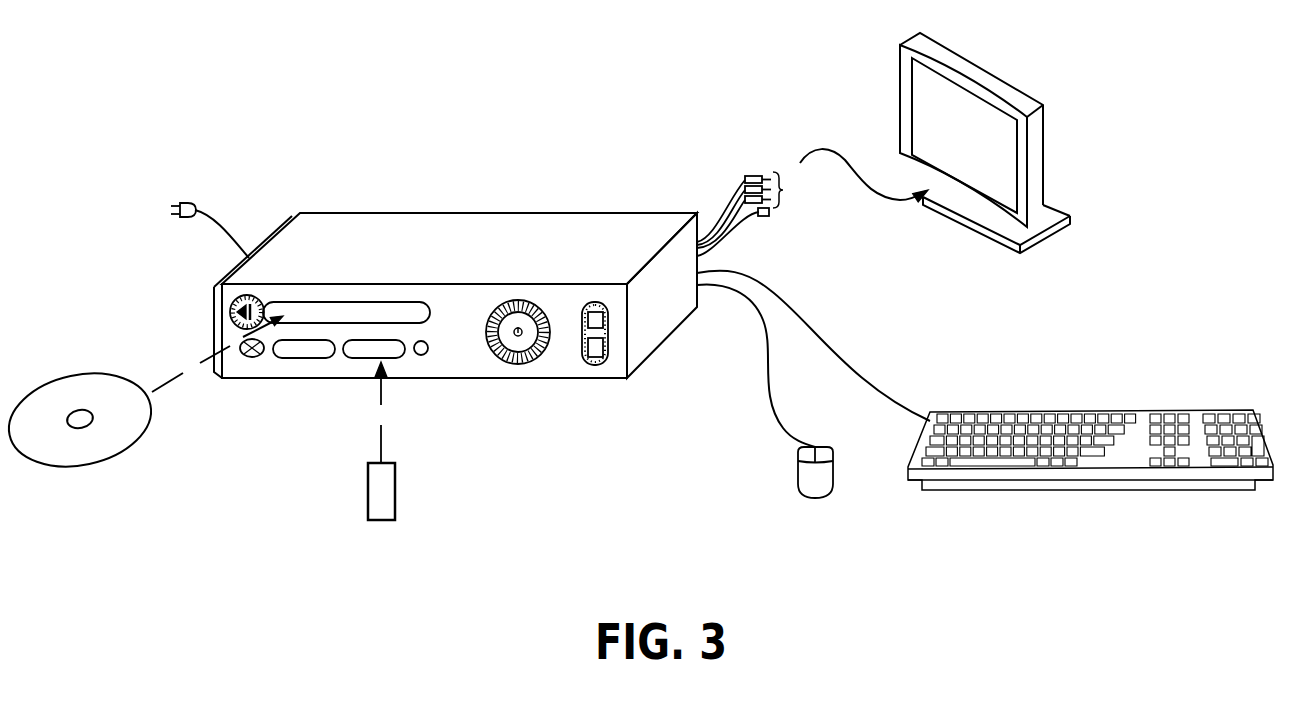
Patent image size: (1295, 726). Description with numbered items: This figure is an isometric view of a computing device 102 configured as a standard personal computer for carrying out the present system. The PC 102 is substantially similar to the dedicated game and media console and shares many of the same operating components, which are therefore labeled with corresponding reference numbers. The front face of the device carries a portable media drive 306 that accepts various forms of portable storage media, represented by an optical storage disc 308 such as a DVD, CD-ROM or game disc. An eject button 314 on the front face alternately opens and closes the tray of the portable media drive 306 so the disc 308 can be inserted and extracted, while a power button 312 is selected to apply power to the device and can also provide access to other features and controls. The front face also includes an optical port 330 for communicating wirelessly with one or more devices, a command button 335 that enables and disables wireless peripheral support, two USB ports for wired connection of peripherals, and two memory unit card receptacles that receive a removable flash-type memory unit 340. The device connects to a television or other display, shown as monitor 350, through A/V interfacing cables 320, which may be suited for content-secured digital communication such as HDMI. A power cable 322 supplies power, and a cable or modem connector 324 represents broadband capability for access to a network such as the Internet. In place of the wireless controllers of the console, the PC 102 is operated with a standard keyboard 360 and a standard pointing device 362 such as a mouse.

The computing device 102 is at (490, 170).
The portable media drive 306 is at (351, 302).
The optical storage disc 308 is at (88, 463).
The power button 312 is at (518, 355).
The eject button 314 is at (238, 309).
The A/V interfacing cables 320 is at (753, 177).
The power cable 322 is at (180, 203).
The cable or modem connector 324 is at (765, 216).
The optical port 330 is at (248, 358).
The command button 335 is at (421, 356).
The memory unit 340 is at (384, 520).
The monitor 350 is at (900, 104).
The keyboard 360 is at (1143, 412).
The pointing device 362 is at (800, 495).